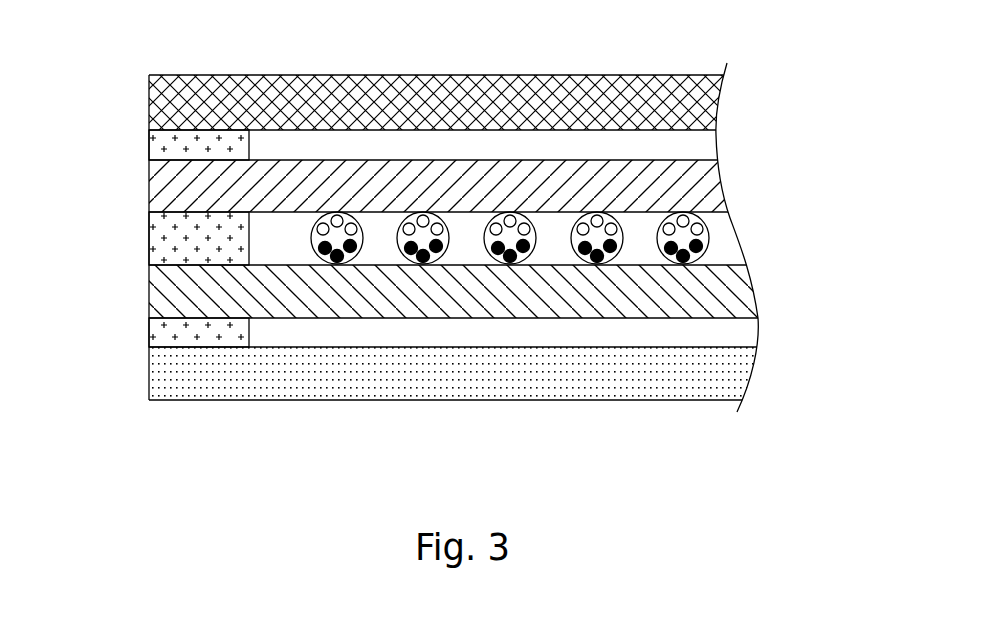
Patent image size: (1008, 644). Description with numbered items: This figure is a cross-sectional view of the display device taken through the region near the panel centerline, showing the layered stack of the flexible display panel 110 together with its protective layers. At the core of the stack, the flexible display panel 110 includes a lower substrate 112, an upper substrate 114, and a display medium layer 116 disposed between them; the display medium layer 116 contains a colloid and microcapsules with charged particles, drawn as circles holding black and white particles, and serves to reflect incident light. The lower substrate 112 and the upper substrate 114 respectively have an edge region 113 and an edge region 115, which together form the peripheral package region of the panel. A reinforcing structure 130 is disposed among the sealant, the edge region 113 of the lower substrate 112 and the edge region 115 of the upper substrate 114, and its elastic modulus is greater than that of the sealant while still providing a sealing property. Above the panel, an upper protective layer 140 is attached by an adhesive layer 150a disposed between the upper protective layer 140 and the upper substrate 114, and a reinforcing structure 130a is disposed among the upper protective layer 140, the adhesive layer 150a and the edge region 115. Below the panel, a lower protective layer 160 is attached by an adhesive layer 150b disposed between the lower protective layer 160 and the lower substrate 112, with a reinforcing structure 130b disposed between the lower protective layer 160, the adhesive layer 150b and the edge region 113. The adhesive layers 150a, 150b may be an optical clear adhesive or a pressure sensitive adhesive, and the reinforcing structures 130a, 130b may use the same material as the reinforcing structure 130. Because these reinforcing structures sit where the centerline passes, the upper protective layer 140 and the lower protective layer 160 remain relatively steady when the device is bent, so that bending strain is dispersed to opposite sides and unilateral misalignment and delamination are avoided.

The flexible display panel 110 is at (810, 165).
The lower substrate 112 is at (738, 296).
The edge region 113 is at (171, 302).
The upper substrate 114 is at (713, 190).
The edge region 115 is at (171, 194).
The display medium layer 116 is at (727, 238).
The reinforcing structure 130 is at (157, 241).
The reinforcing structure 130a is at (157, 149).
The reinforcing structure 130b is at (157, 334).
The upper protective layer 140 is at (486, 98).
The adhesive layer 150a is at (582, 147).
The adhesive layer 150b is at (580, 330).
The lower protective layer 160 is at (490, 382).